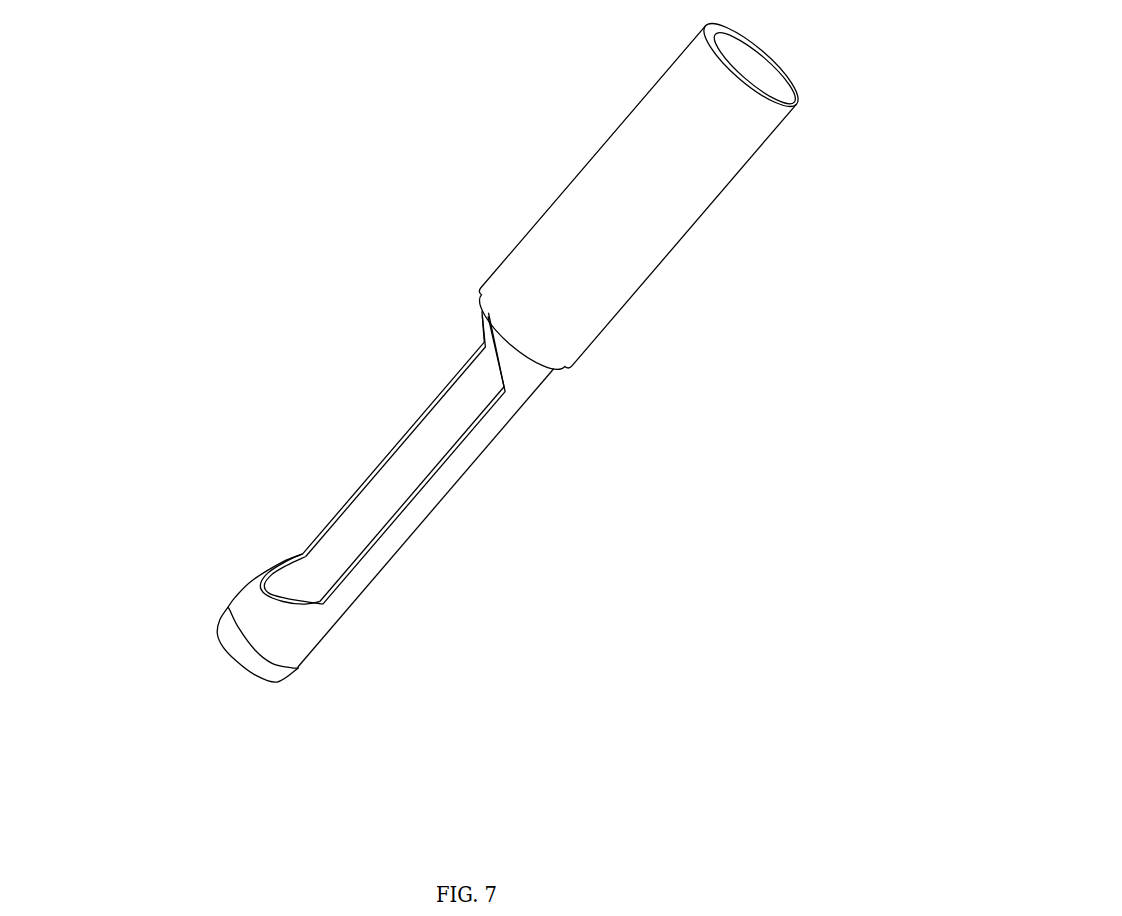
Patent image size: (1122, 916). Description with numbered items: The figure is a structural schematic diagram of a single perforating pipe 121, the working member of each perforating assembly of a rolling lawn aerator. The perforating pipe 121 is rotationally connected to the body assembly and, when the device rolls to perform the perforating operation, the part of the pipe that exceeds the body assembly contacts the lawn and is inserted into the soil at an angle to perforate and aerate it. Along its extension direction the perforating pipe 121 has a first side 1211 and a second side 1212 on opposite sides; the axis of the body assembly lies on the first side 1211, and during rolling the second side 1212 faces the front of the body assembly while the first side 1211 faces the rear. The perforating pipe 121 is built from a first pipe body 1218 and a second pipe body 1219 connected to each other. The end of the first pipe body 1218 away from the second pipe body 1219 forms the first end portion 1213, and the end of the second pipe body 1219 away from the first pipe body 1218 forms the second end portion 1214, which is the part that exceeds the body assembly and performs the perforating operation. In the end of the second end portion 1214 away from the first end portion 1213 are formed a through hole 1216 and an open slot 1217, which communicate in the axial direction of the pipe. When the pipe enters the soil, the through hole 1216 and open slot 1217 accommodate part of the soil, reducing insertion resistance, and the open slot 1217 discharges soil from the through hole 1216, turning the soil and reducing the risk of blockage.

The perforating pipe 121 is at (472, 173).
The first side 1211 is at (187, 552).
The second side 1212 is at (378, 672).
The first end portion 1213 is at (770, 103).
The second end portion 1214 is at (303, 638).
The through hole 1216 is at (235, 660).
The open slot 1217 is at (368, 503).
The first pipe body 1218 is at (660, 182).
The second pipe body 1219 is at (461, 468).